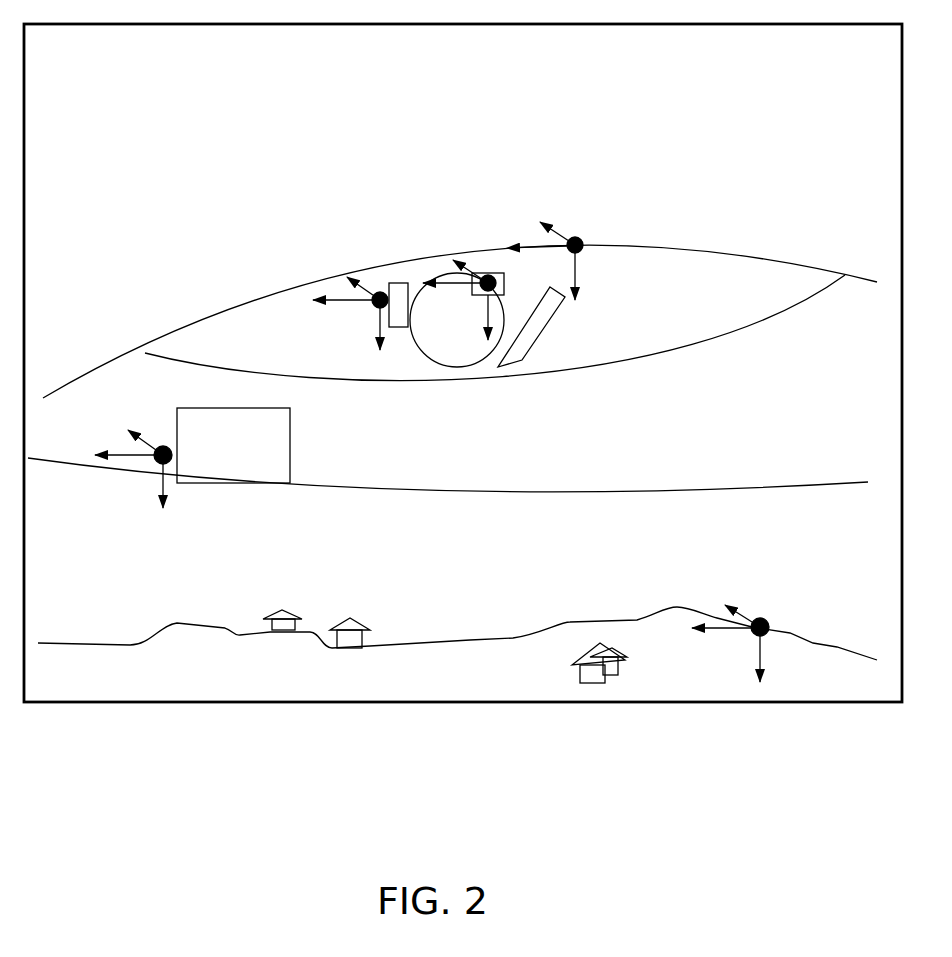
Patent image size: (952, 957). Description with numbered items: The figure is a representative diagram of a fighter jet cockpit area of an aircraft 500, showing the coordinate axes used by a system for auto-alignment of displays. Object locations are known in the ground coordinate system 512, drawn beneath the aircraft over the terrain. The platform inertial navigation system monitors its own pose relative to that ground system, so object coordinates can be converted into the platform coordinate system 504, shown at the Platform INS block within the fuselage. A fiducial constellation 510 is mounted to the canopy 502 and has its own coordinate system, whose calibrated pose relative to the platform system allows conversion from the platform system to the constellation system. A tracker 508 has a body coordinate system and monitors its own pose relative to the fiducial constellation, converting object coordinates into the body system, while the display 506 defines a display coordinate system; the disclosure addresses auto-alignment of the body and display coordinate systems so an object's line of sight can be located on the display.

The aircraft 500 is at (240, 188).
The canopy 502 is at (233, 307).
The platform coordinate system 504 is at (283, 450).
The display 506 is at (402, 283).
The tracker 508 is at (503, 273).
The fiducial constellation 510 is at (583, 240).
The ground coordinate system 512 is at (773, 612).